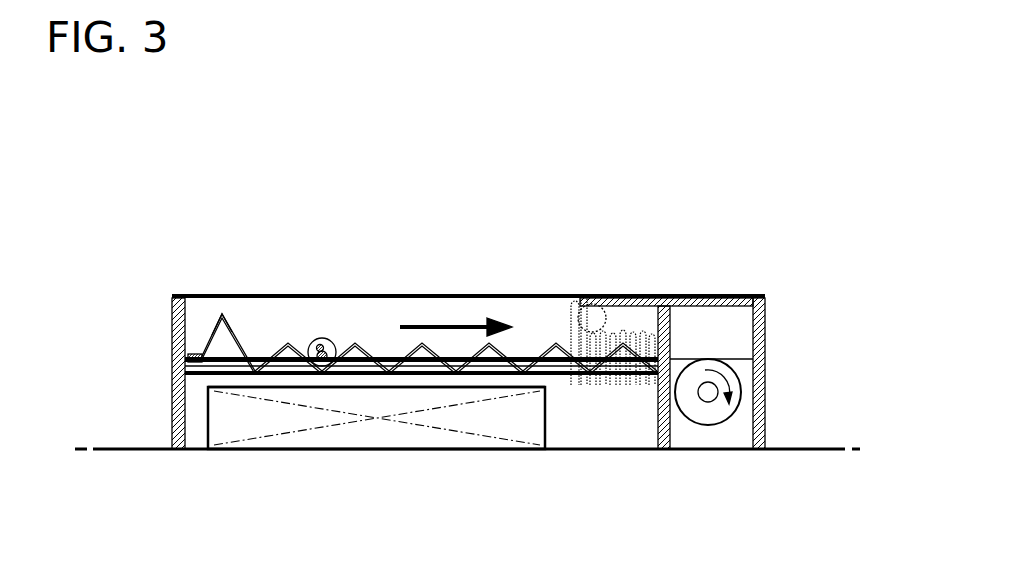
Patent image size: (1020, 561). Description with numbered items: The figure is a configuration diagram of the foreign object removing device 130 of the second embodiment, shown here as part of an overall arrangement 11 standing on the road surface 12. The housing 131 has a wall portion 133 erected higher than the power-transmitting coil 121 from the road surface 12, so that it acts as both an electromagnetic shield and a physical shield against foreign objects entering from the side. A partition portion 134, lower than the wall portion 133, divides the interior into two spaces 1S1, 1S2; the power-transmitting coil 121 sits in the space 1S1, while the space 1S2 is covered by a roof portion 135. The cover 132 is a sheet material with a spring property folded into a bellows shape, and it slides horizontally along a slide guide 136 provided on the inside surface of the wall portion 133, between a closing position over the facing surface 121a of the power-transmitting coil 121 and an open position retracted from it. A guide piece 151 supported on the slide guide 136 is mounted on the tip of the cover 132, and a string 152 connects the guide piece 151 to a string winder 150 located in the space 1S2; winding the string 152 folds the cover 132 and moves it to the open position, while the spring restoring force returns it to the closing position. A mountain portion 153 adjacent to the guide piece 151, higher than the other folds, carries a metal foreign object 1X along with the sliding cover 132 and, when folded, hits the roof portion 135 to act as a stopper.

The printing apparatus 11 is at (133, 238).
The road surface 12 is at (120, 446).
The power-transmitting coil 121 is at (208, 422).
The facing surface 121a is at (349, 378).
The foreign object removing device 130 is at (432, 290).
The housing 131 is at (170, 328).
The cover 132 is at (368, 356).
The wall portion 133 is at (172, 304).
The partition portion 134 is at (658, 415).
The roof portion 135 is at (723, 300).
The slide guide 136 is at (524, 366).
The string winder 150 is at (713, 398).
The guide piece 151 is at (192, 353).
The string 152 is at (238, 338).
The mountain portion 153 is at (222, 311).
The space 1S1 is at (278, 383).
The space 1S2 is at (693, 326).
The foreign object 1X is at (323, 338).